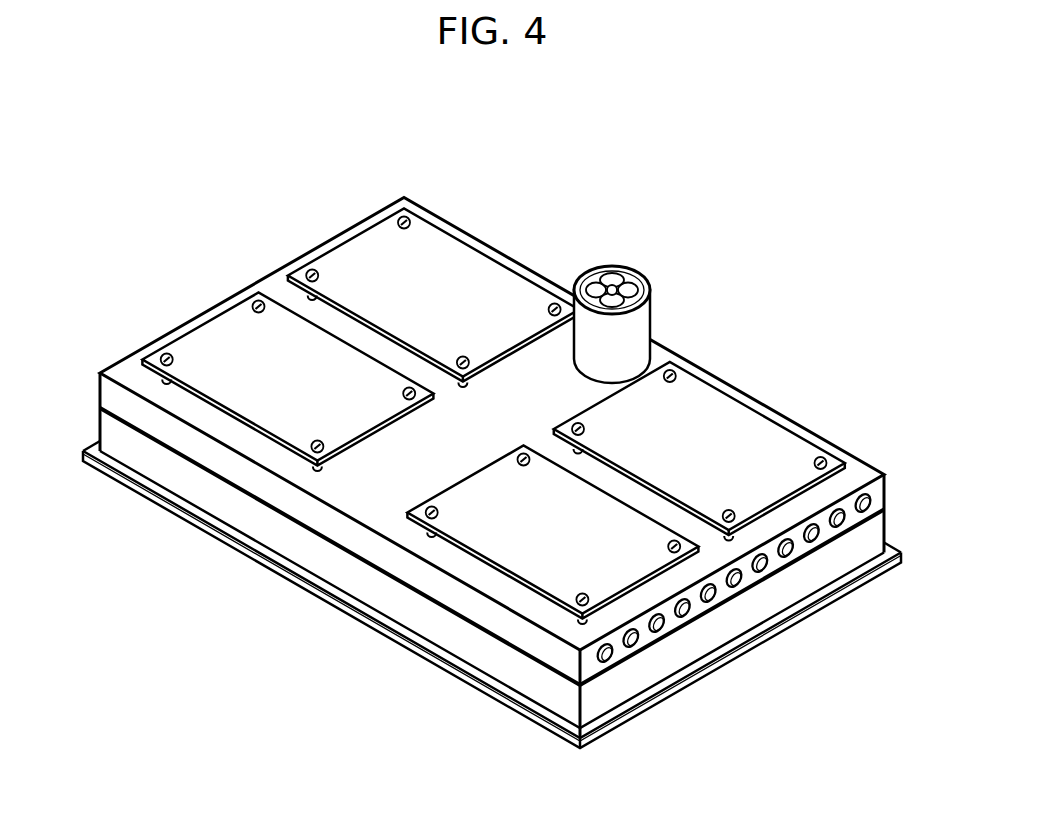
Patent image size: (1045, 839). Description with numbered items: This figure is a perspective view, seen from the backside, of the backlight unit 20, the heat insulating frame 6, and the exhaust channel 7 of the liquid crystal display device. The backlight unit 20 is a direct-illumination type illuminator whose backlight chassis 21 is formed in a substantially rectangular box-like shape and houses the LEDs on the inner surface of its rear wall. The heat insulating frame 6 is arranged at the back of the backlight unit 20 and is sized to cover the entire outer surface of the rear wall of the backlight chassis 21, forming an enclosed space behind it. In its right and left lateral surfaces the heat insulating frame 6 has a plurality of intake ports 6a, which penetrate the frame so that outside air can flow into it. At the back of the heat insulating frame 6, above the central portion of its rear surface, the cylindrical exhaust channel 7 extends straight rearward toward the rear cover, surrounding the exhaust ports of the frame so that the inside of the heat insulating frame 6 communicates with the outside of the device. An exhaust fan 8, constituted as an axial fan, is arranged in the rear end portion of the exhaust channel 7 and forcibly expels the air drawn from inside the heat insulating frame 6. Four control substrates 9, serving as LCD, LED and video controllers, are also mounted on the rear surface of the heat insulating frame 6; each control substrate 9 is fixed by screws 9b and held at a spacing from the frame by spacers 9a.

The heat insulating frame 6 is at (473, 240).
The intake ports 6a is at (637, 647).
The exhaust channel 7 is at (652, 317).
The exhaust fan 8 is at (617, 272).
The control substrate 9 is at (488, 273).
The spacers 9a is at (309, 293).
The screws 9b is at (404, 216).
The backlight unit 20 is at (307, 600).
The backlight chassis 21 is at (362, 622).